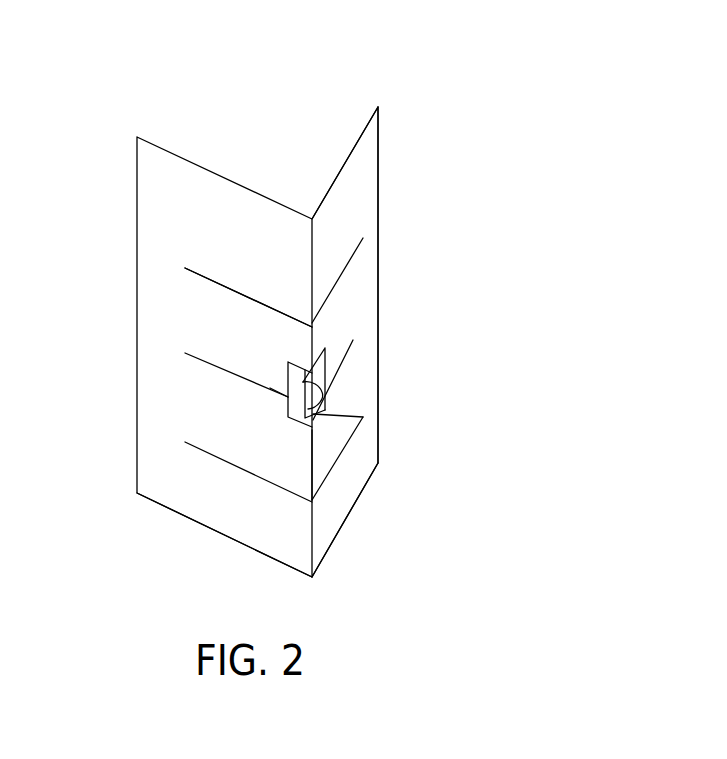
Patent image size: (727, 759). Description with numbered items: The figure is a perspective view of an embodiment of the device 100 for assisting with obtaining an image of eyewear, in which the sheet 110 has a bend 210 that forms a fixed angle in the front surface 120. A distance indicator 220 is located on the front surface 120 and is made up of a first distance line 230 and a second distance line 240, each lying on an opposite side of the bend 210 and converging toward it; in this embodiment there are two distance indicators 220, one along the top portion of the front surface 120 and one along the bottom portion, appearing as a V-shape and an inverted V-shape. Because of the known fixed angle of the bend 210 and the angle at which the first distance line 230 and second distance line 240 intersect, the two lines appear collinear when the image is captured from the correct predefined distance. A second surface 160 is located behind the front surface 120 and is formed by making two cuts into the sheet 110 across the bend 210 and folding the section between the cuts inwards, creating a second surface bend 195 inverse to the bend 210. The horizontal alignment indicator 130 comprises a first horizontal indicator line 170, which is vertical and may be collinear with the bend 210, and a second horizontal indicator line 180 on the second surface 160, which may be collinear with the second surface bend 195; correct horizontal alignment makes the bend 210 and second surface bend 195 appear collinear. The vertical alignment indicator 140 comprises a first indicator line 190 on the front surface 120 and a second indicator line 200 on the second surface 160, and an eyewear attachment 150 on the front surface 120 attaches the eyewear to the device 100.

The device 100 is at (552, 78).
The sheet 110 is at (348, 155).
The front surface 120 is at (363, 180).
The horizontal alignment indicator 130 is at (342, 476).
The vertical alignment indicator 140 is at (185, 374).
The eyewear attachment 150 is at (318, 419).
The second surface 160 is at (363, 416).
The first horizontal indicator line 170 is at (312, 462).
The second horizontal indicator line 180 is at (318, 373).
The first indicator line 190 is at (353, 336).
The second surface bend 195 is at (288, 396).
The second indicator line 200 is at (320, 398).
The bend 210 is at (301, 554).
The distance indicator 220 is at (175, 281).
The first distance line 230 is at (222, 286).
The second distance line 240 is at (354, 268).